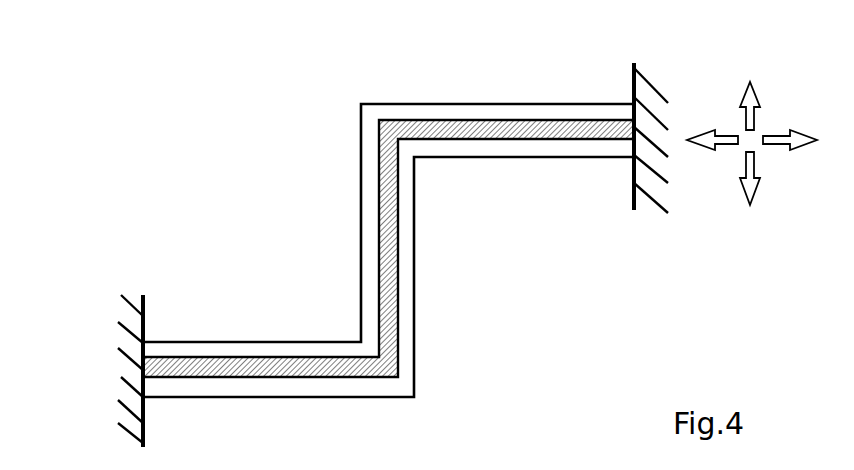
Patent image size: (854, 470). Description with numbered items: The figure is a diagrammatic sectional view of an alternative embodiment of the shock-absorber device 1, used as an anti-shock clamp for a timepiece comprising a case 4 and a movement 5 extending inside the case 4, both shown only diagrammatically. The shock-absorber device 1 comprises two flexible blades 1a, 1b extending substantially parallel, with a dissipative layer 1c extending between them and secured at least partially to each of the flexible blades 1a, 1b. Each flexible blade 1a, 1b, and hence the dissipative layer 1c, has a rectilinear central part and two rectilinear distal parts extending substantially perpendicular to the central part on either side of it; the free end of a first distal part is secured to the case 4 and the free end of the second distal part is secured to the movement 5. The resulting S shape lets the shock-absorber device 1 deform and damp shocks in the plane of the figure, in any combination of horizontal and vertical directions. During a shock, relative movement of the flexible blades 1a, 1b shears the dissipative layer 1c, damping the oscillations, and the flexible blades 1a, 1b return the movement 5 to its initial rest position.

The shock-absorber device 1 is at (388, 227).
The flexible blade 1a is at (370, 318).
The flexible blade 1b is at (405, 208).
The dissipative layer 1c is at (387, 267).
The case 4 is at (132, 343).
The movement 5 is at (663, 193).